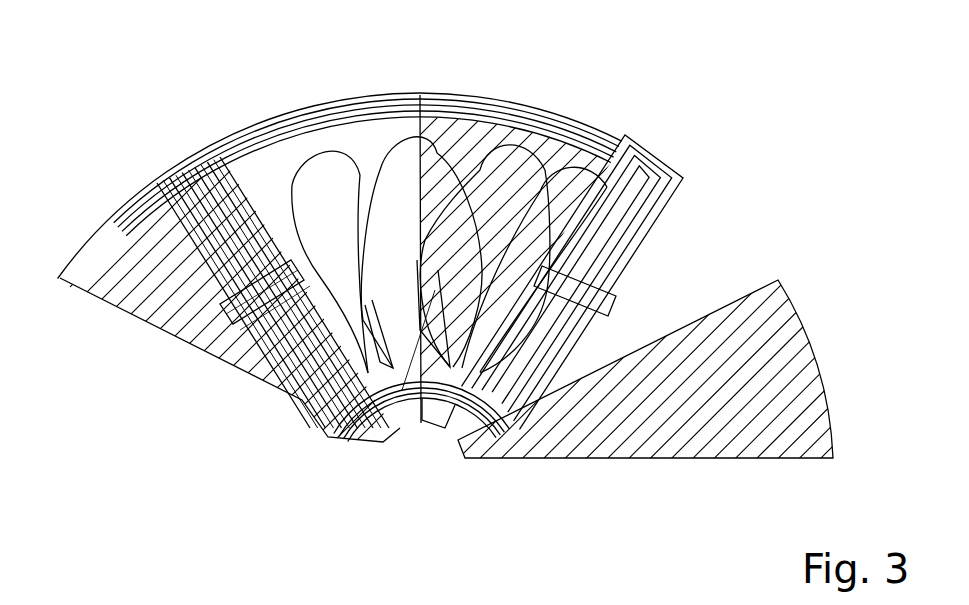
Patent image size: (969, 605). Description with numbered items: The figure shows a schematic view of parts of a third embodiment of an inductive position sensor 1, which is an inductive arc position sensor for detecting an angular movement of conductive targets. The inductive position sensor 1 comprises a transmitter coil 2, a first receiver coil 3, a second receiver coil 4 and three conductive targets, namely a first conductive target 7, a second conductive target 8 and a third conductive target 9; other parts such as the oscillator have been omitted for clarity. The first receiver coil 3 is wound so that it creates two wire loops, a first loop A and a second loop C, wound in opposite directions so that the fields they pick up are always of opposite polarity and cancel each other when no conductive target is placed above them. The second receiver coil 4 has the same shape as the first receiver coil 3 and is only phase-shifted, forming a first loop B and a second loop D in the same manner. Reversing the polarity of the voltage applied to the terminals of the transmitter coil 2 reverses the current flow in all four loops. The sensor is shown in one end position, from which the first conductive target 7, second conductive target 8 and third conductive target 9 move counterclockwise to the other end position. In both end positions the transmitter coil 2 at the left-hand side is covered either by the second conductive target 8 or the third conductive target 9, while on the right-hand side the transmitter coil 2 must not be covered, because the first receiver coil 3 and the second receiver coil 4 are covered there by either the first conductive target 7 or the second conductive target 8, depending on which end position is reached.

The inductive position sensor 1 is at (109, 427).
The transmitter coil 2 is at (645, 222).
The first receiver coil 3 is at (318, 180).
The second receiver coil 4 is at (388, 145).
The first conductive target 7 is at (747, 368).
The second conductive target 8 is at (568, 165).
The third conductive target 9 is at (155, 272).
The first loop A is at (287, 232).
The first loop B is at (315, 195).
The second loop C is at (258, 380).
The second loop D is at (402, 390).